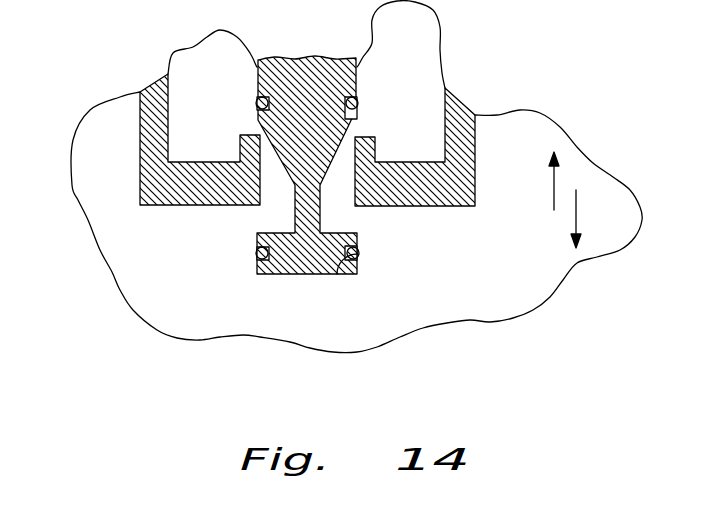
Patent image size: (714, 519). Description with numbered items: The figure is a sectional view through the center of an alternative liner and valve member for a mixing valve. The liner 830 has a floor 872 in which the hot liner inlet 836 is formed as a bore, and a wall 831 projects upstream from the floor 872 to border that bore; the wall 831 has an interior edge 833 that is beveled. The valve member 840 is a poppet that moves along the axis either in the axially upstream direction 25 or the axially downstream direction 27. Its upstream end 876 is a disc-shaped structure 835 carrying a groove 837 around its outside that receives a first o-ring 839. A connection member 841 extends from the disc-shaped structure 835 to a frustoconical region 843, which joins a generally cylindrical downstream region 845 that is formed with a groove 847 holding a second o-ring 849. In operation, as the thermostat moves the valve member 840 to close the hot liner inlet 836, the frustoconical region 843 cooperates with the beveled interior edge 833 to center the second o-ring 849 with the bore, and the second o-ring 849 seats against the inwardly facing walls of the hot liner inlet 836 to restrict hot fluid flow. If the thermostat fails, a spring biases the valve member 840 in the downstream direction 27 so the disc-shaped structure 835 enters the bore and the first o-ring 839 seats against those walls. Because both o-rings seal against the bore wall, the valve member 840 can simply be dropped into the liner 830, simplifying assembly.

The axially upstream direction 25 is at (577, 203).
The axially downstream direction 27 is at (553, 193).
The liner 830 is at (489, 192).
The wall 831 is at (242, 136).
The interior edge 833 is at (270, 167).
The disc-shaped structure 835 is at (313, 275).
The hot liner inlet 836 is at (344, 203).
The groove 837 is at (337, 275).
The first o-ring 839 is at (255, 250).
The valve member 840 is at (393, 68).
The connection member 841 is at (292, 220).
The frustoconical region 843 is at (294, 210).
The downstream region 845 is at (357, 68).
The groove 847 is at (352, 167).
The second o-ring 849 is at (258, 98).
The floor 872 is at (157, 204).
The upstream end 876 is at (382, 253).